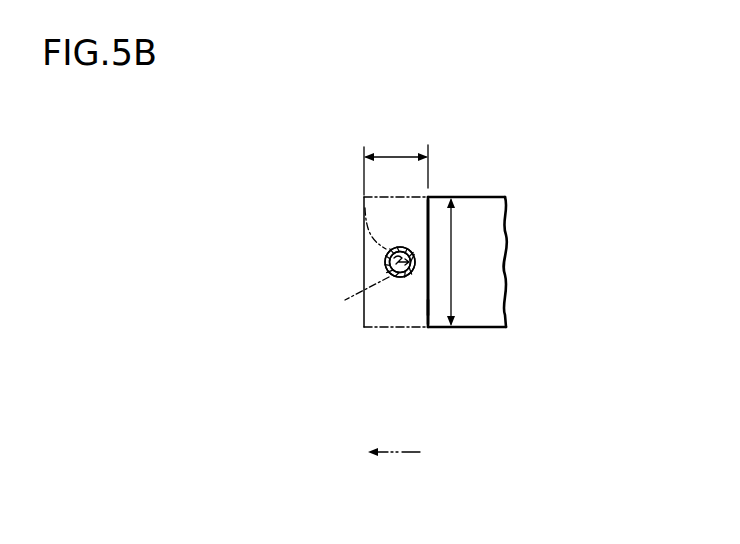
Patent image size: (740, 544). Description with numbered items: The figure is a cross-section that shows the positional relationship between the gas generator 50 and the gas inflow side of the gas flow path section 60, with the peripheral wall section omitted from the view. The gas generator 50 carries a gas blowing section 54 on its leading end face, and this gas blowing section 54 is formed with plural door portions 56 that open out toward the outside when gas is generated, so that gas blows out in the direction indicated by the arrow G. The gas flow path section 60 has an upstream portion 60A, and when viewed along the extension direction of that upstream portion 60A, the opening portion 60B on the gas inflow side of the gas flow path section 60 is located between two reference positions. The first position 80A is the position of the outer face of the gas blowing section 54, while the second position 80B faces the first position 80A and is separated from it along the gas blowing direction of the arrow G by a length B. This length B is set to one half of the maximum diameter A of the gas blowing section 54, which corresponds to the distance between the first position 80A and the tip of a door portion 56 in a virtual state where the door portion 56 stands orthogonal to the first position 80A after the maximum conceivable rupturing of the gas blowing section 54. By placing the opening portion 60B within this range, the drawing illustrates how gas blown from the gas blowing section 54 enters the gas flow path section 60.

The gas generator 50 is at (485, 183).
The gas blowing section 54 is at (422, 209).
The door portions 56 is at (374, 197).
The gas flow path section 60 is at (400, 262).
The upstream portion 60A is at (398, 286).
The opening portion 60B is at (386, 257).
The first position 80A is at (428, 307).
The second position 80B is at (345, 300).
The maximum diameter A is at (452, 268).
The length B is at (400, 157).
The arrow G is at (412, 453).